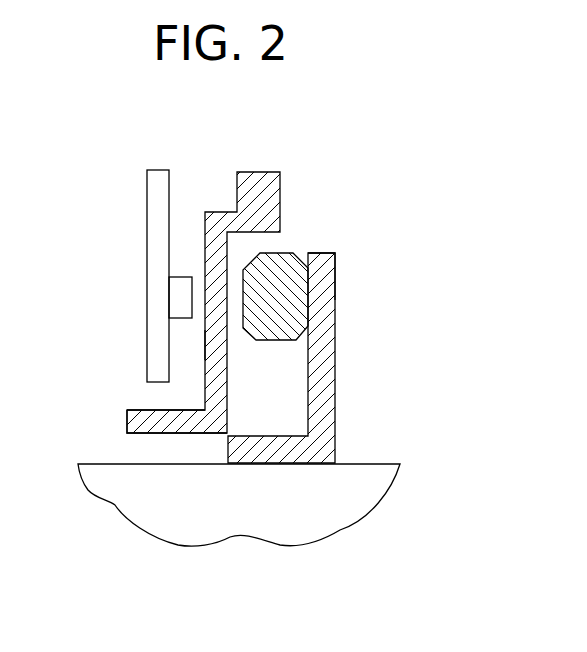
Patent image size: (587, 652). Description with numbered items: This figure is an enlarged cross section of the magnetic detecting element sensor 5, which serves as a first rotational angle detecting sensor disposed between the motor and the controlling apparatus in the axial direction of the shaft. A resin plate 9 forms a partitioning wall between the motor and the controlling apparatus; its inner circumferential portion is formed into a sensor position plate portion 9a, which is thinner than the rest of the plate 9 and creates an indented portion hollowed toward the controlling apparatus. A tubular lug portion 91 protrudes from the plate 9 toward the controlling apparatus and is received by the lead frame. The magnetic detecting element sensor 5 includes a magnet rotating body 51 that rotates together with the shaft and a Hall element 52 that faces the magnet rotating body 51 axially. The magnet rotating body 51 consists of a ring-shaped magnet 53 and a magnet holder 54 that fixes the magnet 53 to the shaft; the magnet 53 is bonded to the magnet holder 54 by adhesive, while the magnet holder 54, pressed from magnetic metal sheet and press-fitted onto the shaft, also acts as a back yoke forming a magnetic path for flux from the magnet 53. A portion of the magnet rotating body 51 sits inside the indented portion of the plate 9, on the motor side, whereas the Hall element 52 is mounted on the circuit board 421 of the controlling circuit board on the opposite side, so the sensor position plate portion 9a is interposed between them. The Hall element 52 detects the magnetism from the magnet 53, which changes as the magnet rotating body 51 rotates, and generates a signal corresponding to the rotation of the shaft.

The magnetic detecting element sensor 5 is at (370, 230).
The plate 9 is at (266, 172).
The sensor position plate portion 9a is at (216, 345).
The tubular lug portion 91 is at (127, 413).
The circuit board 421 is at (157, 210).
The magnet rotating body 51 is at (335, 258).
The Hall element 52 is at (180, 277).
The magnet 53 is at (290, 256).
The magnet holder 54 is at (335, 345).